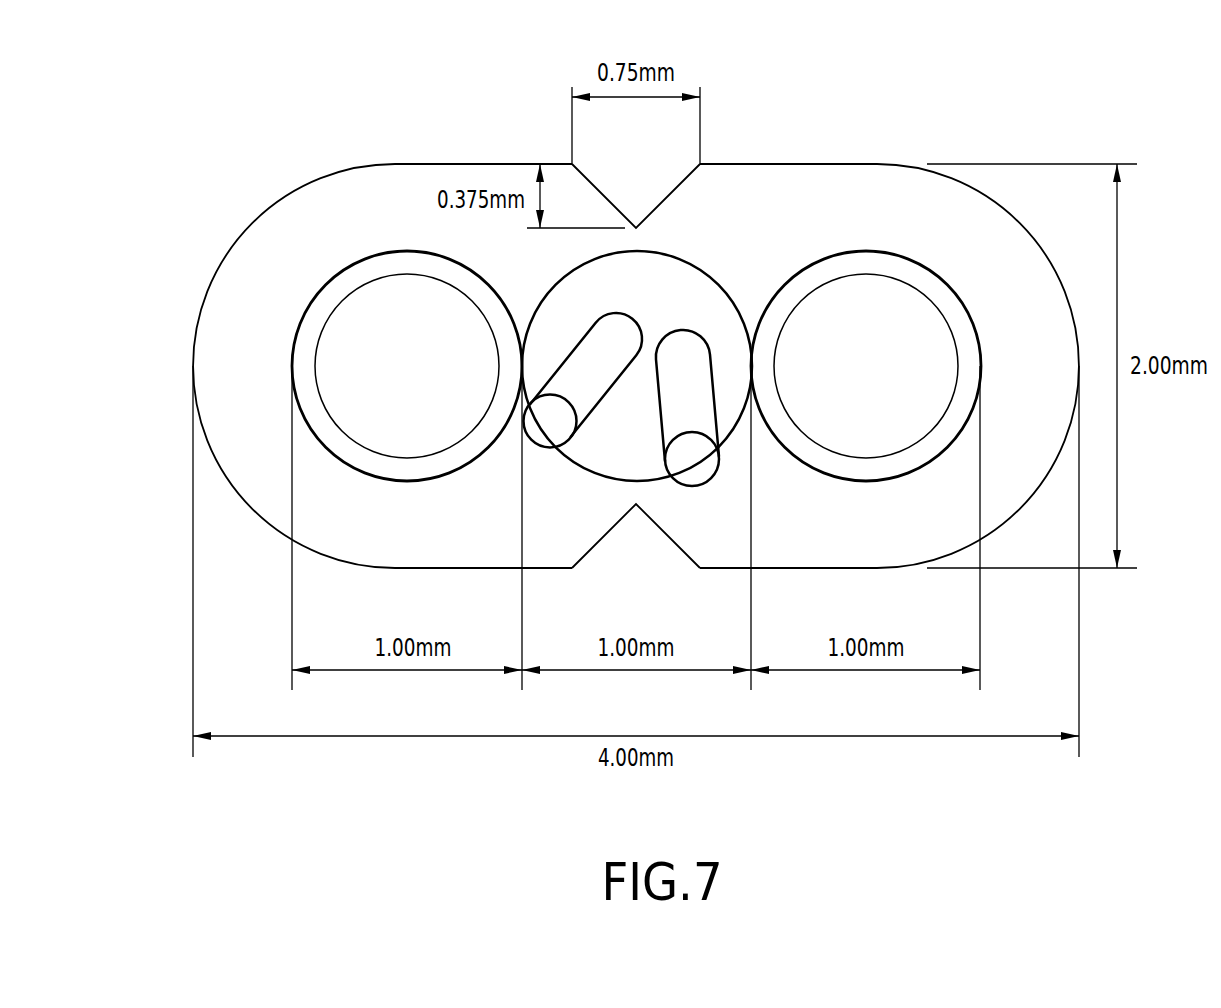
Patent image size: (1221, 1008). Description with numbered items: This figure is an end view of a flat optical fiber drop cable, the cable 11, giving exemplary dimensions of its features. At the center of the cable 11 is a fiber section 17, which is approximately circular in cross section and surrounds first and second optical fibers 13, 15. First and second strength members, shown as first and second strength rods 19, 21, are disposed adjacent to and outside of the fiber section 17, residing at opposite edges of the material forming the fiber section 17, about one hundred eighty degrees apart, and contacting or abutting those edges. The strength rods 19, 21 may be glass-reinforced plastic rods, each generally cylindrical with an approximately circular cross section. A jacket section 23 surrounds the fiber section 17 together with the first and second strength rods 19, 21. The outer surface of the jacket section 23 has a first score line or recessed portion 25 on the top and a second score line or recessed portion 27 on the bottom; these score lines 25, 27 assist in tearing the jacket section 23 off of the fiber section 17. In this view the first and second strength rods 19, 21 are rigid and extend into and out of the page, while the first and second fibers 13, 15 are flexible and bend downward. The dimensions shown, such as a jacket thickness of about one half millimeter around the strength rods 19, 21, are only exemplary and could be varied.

The cable 11 is at (614, 300).
The first optical fiber 13 is at (572, 369).
The second optical fiber 15 is at (692, 398).
The fiber section 17 is at (677, 277).
The first strength rod 19 is at (394, 381).
The second strength rod 21 is at (853, 379).
The jacket section 23 is at (250, 278).
The first score line 25 is at (623, 196).
The second score line 27 is at (623, 562).